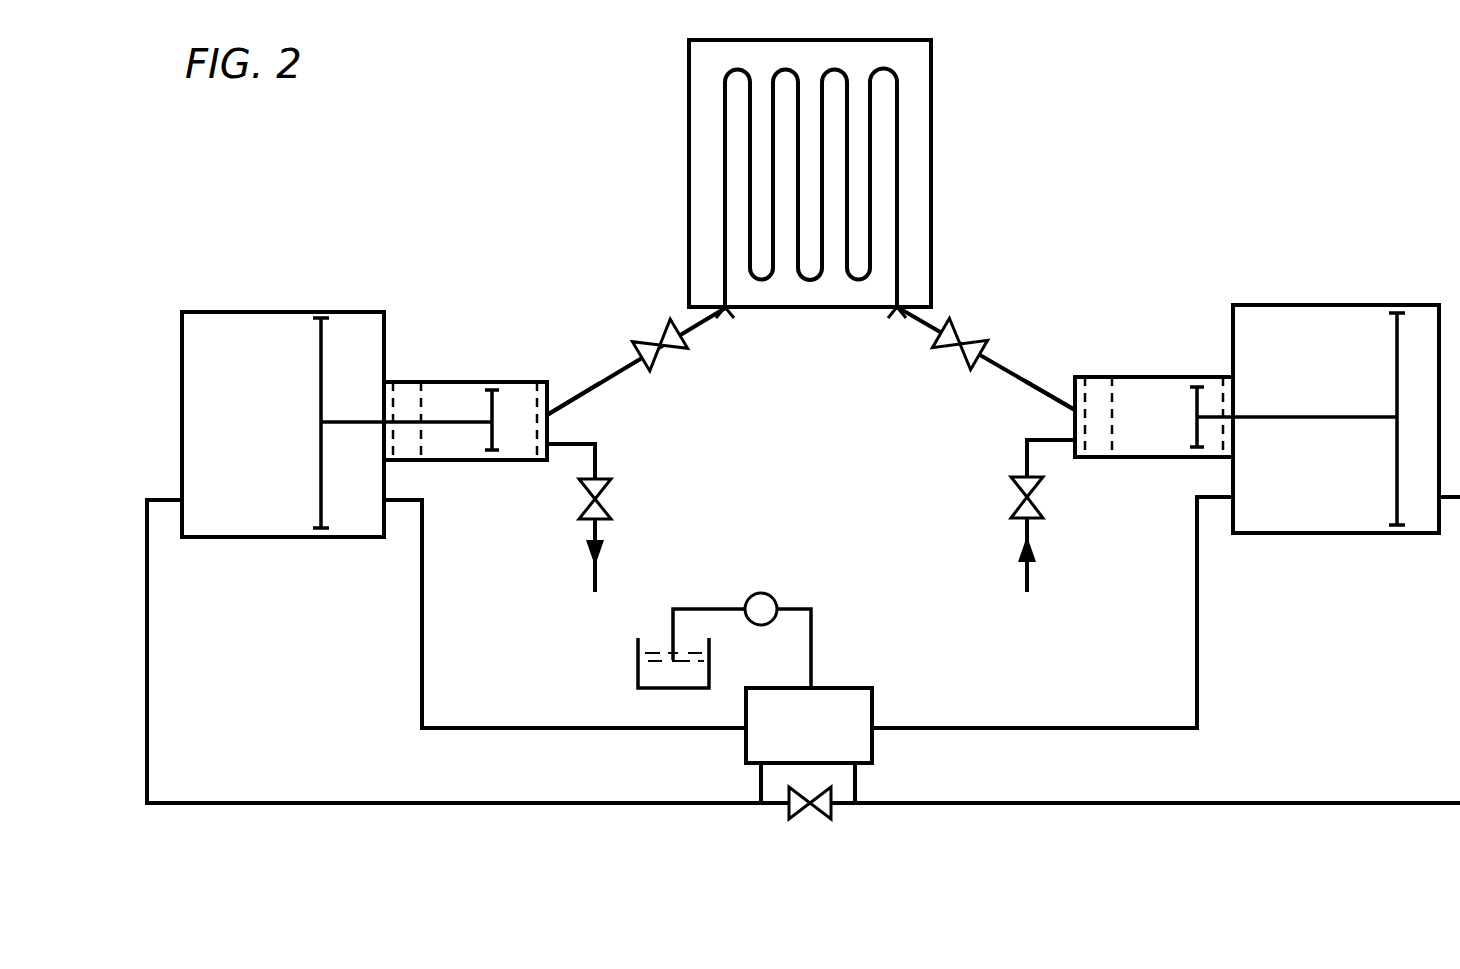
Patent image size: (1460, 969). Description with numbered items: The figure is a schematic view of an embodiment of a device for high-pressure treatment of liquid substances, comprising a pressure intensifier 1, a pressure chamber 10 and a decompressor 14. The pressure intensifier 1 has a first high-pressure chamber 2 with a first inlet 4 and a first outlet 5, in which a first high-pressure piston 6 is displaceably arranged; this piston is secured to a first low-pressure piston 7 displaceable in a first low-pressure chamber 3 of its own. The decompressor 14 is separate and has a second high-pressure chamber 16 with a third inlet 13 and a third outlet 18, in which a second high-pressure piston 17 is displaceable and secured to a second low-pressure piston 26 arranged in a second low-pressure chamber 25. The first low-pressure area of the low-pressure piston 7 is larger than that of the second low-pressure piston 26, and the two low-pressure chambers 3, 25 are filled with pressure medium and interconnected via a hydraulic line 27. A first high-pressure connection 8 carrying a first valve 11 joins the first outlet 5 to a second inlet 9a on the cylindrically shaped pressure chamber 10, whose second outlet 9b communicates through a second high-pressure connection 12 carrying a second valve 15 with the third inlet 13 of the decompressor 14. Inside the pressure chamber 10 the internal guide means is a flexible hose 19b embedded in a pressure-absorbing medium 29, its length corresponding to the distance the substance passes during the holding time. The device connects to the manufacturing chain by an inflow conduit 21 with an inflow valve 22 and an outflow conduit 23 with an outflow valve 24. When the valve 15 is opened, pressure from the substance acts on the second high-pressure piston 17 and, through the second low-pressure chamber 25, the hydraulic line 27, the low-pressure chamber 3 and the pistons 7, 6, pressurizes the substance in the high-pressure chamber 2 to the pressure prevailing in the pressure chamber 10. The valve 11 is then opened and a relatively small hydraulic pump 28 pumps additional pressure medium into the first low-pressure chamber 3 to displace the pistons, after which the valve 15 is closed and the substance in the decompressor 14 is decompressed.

The pressure intensifier 1 is at (1151, 368).
The high-pressure chamber 2 is at (1145, 440).
The low-pressure chamber 3 is at (1298, 538).
The first inlet 4 is at (1040, 432).
The first outlet 5 is at (1068, 405).
The first high-pressure piston 6 is at (1194, 445).
The low-pressure piston 7 is at (1395, 525).
The first high-pressure connection 8 is at (1008, 368).
The second inlet 9a is at (885, 313).
The second outlet 9b is at (738, 313).
The pressure chamber 10 is at (938, 117).
The first valve 11 is at (968, 340).
The second high-pressure connection 12 is at (615, 368).
The third inlet 13 is at (555, 405).
The decompressor 14 is at (467, 372).
The second valve 15 is at (655, 340).
The second high-pressure chamber 16 is at (520, 445).
The second high-pressure piston 17 is at (490, 447).
The third outlet 18 is at (550, 432).
The flexible hose 19b is at (722, 130).
The inflow conduit 21 is at (1020, 578).
The inflow valve 22 is at (1020, 496).
The outflow conduit 23 is at (600, 578).
The outflow valve 24 is at (602, 499).
The second low-pressure chamber 25 is at (216, 398).
The second low-pressure piston 26 is at (318, 337).
The hydraulic line 27 is at (1052, 808).
The hydraulic pump 28 is at (771, 596).
The pressure-absorbing medium 29 is at (705, 66).